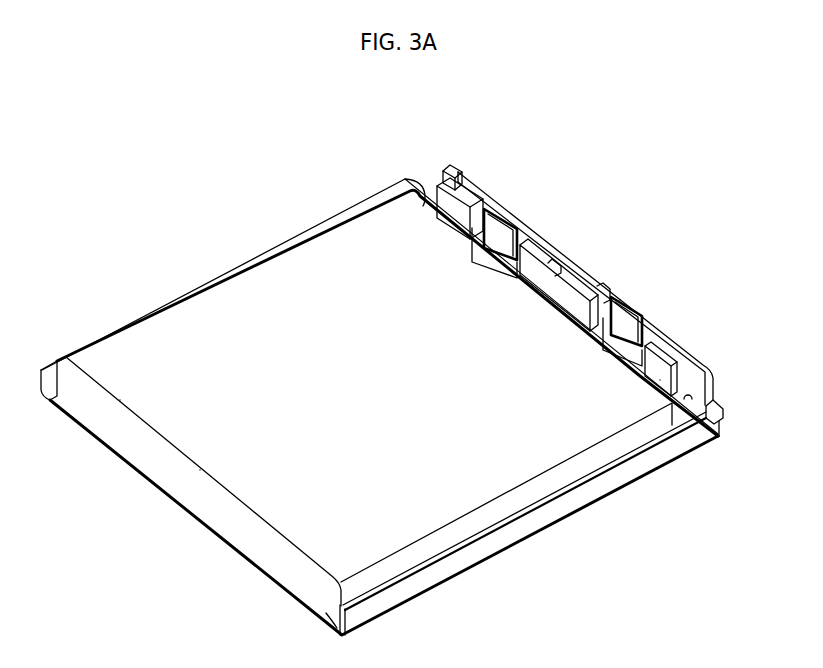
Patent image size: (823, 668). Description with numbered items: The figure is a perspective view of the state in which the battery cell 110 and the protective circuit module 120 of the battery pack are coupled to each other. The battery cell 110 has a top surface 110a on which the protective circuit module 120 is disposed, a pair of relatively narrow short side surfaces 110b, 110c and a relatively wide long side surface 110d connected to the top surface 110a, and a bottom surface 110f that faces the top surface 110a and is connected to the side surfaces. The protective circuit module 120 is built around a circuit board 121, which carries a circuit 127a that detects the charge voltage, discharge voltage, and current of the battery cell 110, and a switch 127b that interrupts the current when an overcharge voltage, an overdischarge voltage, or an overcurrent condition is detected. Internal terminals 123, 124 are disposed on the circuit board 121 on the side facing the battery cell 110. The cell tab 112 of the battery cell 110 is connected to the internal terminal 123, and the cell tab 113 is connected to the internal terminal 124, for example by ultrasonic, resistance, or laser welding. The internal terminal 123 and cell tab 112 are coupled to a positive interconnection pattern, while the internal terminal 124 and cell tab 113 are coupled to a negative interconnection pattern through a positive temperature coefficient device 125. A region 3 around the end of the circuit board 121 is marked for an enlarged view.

The region 3 is at (668, 331).
The battery cell 110 is at (262, 244).
The top surface 110a is at (425, 203).
The short side surface 110b is at (555, 508).
The short side surface 110c is at (63, 353).
The long side surface 110d is at (200, 323).
The bottom surface 110f is at (272, 557).
The cell tab 112 is at (490, 227).
The cell tab 113 is at (613, 310).
The protective circuit module 120 is at (589, 256).
The circuit board 121 is at (703, 366).
The internal terminal 123 is at (516, 230).
The internal terminal 124 is at (637, 325).
The positive temperature coefficient (PTC) device 125 is at (672, 360).
The circuit 127a is at (463, 186).
The switch 127b is at (575, 287).